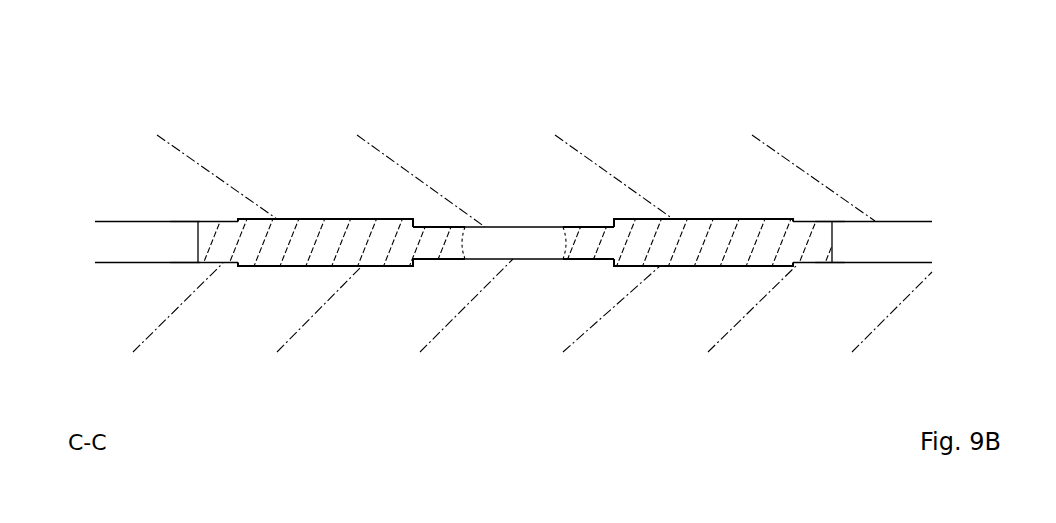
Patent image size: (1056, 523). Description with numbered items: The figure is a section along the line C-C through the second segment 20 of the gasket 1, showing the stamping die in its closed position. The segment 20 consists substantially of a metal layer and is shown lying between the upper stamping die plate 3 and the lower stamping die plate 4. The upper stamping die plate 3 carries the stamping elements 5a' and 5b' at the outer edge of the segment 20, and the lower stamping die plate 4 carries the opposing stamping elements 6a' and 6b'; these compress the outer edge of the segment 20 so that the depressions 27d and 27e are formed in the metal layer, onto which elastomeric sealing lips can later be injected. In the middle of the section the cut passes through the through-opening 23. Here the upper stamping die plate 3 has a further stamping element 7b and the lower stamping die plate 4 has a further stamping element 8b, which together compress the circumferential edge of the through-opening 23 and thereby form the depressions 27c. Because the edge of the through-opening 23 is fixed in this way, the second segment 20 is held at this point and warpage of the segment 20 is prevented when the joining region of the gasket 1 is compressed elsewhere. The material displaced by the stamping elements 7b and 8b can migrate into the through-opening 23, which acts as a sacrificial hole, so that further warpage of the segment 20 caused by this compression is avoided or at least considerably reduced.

The gasket 1 is at (269, 280).
The upper stamping die plate 3 is at (717, 138).
The stamping die plate 4 is at (670, 318).
The stamping element 5a' is at (161, 187).
The stamping element 5b' is at (857, 192).
The stamping element 6a' is at (189, 306).
The stamping element 6b' is at (846, 302).
The further stamping element 7b is at (538, 222).
The further stamping element 8b is at (523, 263).
The second segment 20 is at (213, 244).
The through-opening 23 is at (514, 243).
The depressions 27c is at (430, 262).
The depression 27d is at (817, 218).
The depression 27e is at (220, 222).